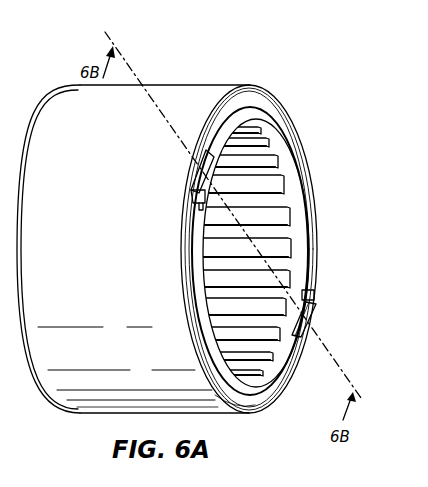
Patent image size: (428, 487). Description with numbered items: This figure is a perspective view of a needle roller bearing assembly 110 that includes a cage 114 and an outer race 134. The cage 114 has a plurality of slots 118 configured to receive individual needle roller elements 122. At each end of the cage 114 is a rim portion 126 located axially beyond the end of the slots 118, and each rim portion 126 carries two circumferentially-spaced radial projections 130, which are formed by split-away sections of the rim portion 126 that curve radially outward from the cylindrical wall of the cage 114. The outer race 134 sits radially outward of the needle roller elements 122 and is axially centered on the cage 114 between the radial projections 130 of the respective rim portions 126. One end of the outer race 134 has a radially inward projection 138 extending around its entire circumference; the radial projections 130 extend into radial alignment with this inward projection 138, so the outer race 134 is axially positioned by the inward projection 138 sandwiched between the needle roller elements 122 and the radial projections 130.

The needle roller bearing assembly 110 is at (352, 150).
The cage 114 is at (313, 262).
The slots 118 is at (290, 280).
The needle roller elements 122 is at (265, 188).
The rim portion 126 is at (310, 278).
The radial projections 130 is at (195, 193).
The outer race 134 is at (117, 274).
The radially inward projection 138 is at (253, 400).